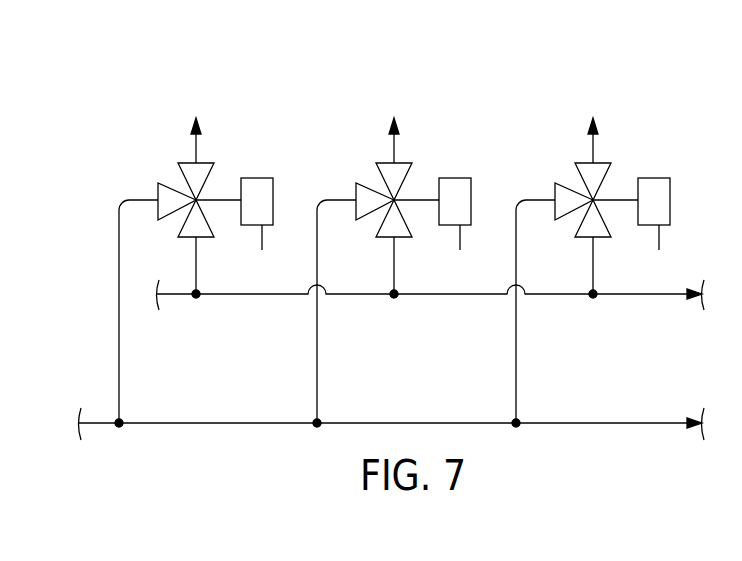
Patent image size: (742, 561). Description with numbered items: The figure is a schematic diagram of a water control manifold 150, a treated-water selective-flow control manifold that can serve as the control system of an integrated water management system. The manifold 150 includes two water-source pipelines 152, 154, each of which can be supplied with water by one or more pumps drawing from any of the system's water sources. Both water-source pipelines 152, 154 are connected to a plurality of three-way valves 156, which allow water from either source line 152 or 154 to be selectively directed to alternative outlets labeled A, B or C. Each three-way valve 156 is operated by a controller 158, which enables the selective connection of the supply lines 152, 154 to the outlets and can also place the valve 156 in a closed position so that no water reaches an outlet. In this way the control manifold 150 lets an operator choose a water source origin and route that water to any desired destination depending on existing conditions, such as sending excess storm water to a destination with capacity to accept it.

The water control manifold 150 is at (514, 57).
The water-source pipeline 152 is at (176, 294).
The water-source pipeline 154 is at (213, 423).
The three-way valve 156 is at (210, 180).
The controller 158 is at (461, 230).